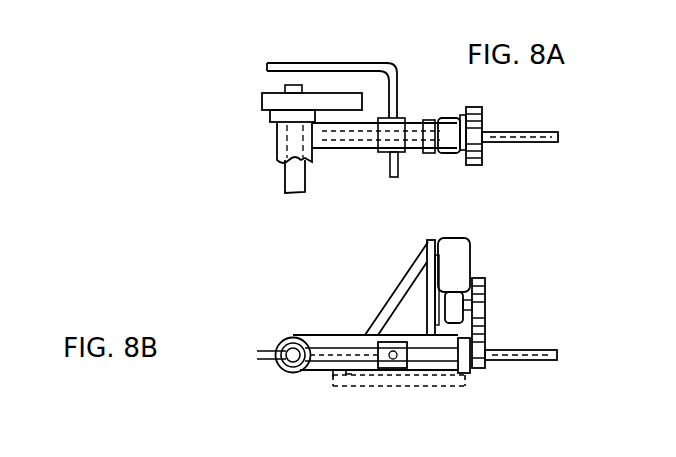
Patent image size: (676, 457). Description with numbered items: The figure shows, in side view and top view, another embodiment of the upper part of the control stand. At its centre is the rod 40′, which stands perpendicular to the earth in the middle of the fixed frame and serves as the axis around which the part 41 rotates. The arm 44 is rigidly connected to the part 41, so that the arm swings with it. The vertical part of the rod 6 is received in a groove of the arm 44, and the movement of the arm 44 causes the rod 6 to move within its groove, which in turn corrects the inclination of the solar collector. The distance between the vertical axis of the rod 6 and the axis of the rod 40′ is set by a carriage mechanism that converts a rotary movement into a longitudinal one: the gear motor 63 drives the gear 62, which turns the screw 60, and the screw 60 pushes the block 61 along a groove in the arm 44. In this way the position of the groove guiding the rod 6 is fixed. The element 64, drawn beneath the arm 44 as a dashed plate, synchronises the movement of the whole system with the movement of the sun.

In FIG. 8A, the rod 6 is at (392, 83).
In FIG. 8B, the rod 6 is at (325, 352).
In FIG. 8A, the rod 40′ is at (295, 197).
In FIG. 8B, the rod 40′ is at (295, 337).
In FIG. 8A, the part 41 is at (278, 163).
In FIG. 8B, the part 41 is at (285, 340).
In FIG. 8A, the arm 44 is at (366, 140).
In FIG. 8B, the arm 44 is at (347, 338).
In FIG. 8A, the screw 60 is at (528, 142).
In FIG. 8B, the screw 60 is at (507, 350).
In FIG. 8A, the block 61 is at (402, 150).
In FIG. 8B, the block 61 is at (397, 343).
In FIG. 8A, the gear 62 is at (482, 155).
In FIG. 8B, the gear 62 is at (477, 278).
In FIG. 8A, the gear motor 63 is at (445, 153).
In FIG. 8B, the gear motor 63 is at (445, 253).
In FIG. 8B, the synchronising element 64 is at (450, 383).